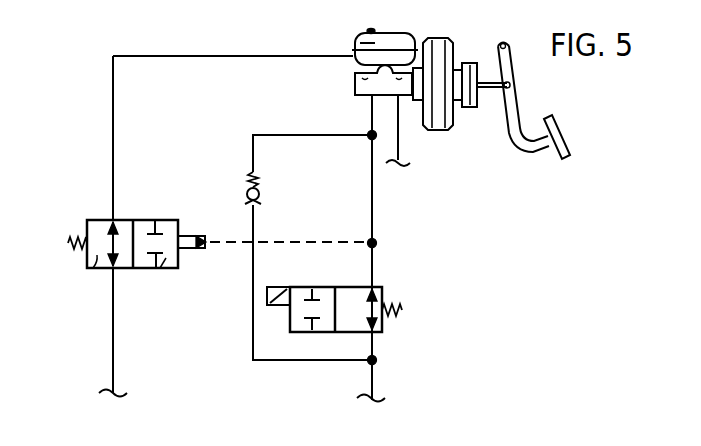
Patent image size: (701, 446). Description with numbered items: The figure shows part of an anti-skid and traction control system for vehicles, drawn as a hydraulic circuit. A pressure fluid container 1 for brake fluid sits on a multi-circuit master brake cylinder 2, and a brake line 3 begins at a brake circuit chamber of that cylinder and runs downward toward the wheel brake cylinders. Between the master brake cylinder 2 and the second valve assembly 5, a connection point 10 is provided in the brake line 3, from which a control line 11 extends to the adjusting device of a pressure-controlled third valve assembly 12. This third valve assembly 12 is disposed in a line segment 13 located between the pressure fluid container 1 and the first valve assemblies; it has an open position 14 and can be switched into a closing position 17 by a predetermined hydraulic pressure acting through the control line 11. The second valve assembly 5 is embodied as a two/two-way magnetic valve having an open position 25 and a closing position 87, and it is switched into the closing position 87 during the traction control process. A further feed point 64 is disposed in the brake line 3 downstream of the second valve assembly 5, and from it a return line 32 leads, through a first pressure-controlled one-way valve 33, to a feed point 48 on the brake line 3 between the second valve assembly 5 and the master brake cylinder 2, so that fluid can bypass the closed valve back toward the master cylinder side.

The pressure fluid container 1 is at (352, 47).
The multi-circuit master brake cylinder 2 is at (356, 82).
The brake line 3 is at (375, 197).
The second valve assembly 5 is at (272, 286).
The connection point 10 is at (377, 246).
The control line 11 is at (212, 247).
The third valve assembly 12 is at (129, 205).
The line segment 13 is at (108, 363).
The open position 14 is at (92, 270).
The closing position 17 is at (160, 270).
The open position 25 is at (384, 325).
The return line 32 is at (251, 348).
The first pressure-controlled one-way valve 33 is at (261, 198).
The feed point 48 is at (369, 139).
The feed point 64 is at (378, 361).
The closing position 87 is at (298, 286).